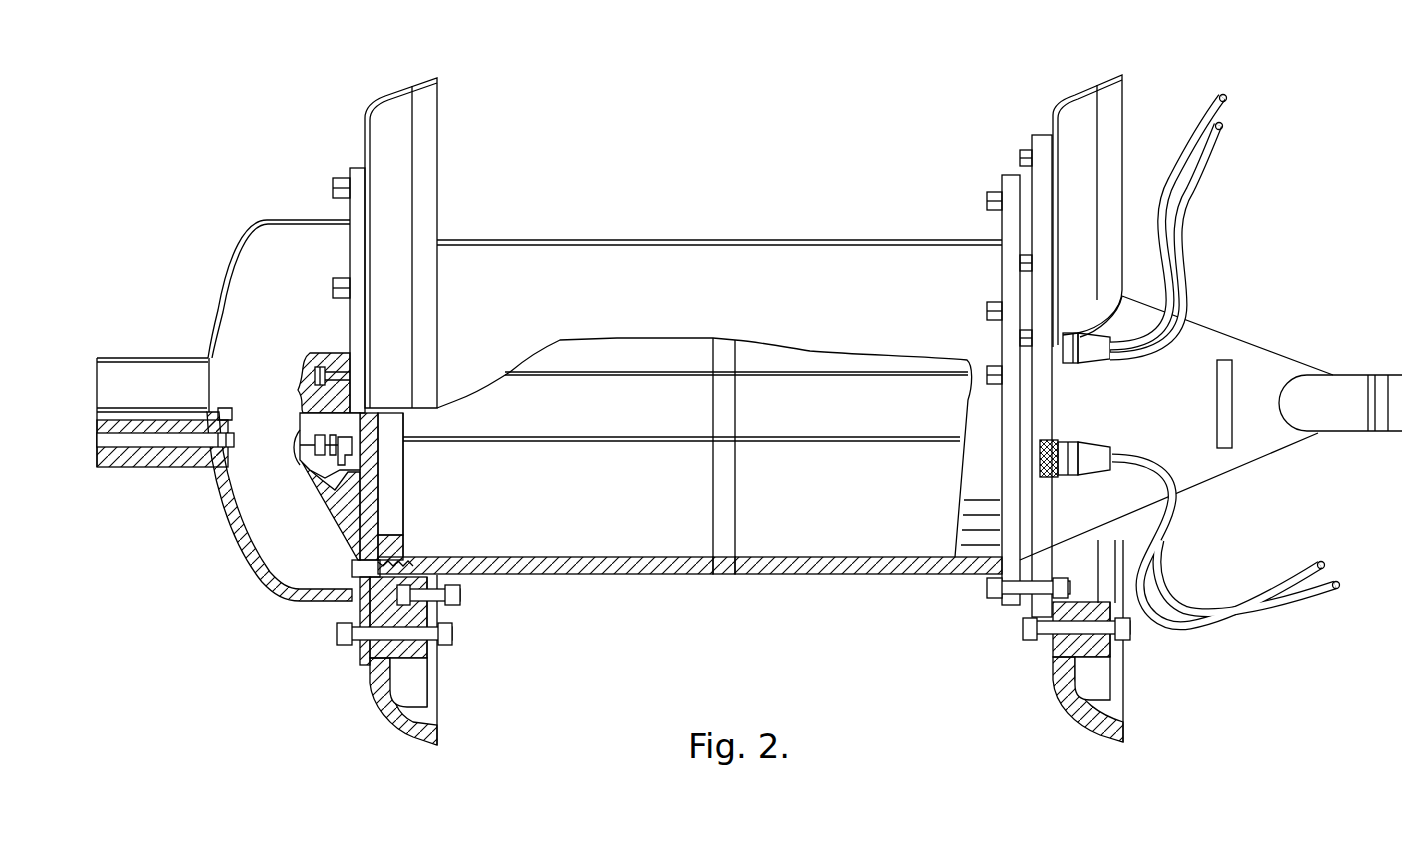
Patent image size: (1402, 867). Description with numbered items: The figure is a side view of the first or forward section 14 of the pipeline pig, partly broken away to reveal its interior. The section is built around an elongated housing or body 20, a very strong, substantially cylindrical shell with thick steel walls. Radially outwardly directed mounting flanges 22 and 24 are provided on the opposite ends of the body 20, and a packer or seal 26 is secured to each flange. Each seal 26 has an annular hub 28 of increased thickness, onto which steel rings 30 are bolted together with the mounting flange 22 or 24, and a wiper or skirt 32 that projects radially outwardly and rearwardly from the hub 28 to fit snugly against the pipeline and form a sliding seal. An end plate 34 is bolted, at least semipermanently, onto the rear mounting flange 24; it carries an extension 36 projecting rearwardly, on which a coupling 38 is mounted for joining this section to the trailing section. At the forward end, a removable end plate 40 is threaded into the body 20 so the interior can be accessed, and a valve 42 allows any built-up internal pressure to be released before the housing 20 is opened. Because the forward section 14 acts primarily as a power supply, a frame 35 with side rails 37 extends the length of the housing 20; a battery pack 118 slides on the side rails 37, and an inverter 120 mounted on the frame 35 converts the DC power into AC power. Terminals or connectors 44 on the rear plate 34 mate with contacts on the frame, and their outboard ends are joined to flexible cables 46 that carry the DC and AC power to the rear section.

The first or forward section 14 is at (783, 238).
The elongated housing or body 20 is at (663, 575).
The mounting flange 22 is at (372, 598).
The rear mounting flange 24 is at (1010, 604).
The packer or seal 26 is at (437, 192).
The annular hub 28 is at (380, 657).
The steel rings 30 is at (350, 655).
The wiper or skirt 32 is at (437, 730).
The end plate 34 is at (1040, 528).
The frame 35 is at (623, 441).
The extension 36 is at (1234, 332).
The side rails 37 is at (776, 372).
The coupling 38 is at (1401, 374).
The forward end plate 40 is at (375, 488).
The valve 42 is at (335, 460).
The terminals or connectors 44 is at (1053, 437).
The flexible cables 46 is at (1180, 124).
The battery pack 118 is at (542, 547).
The inverter 120 is at (847, 530).